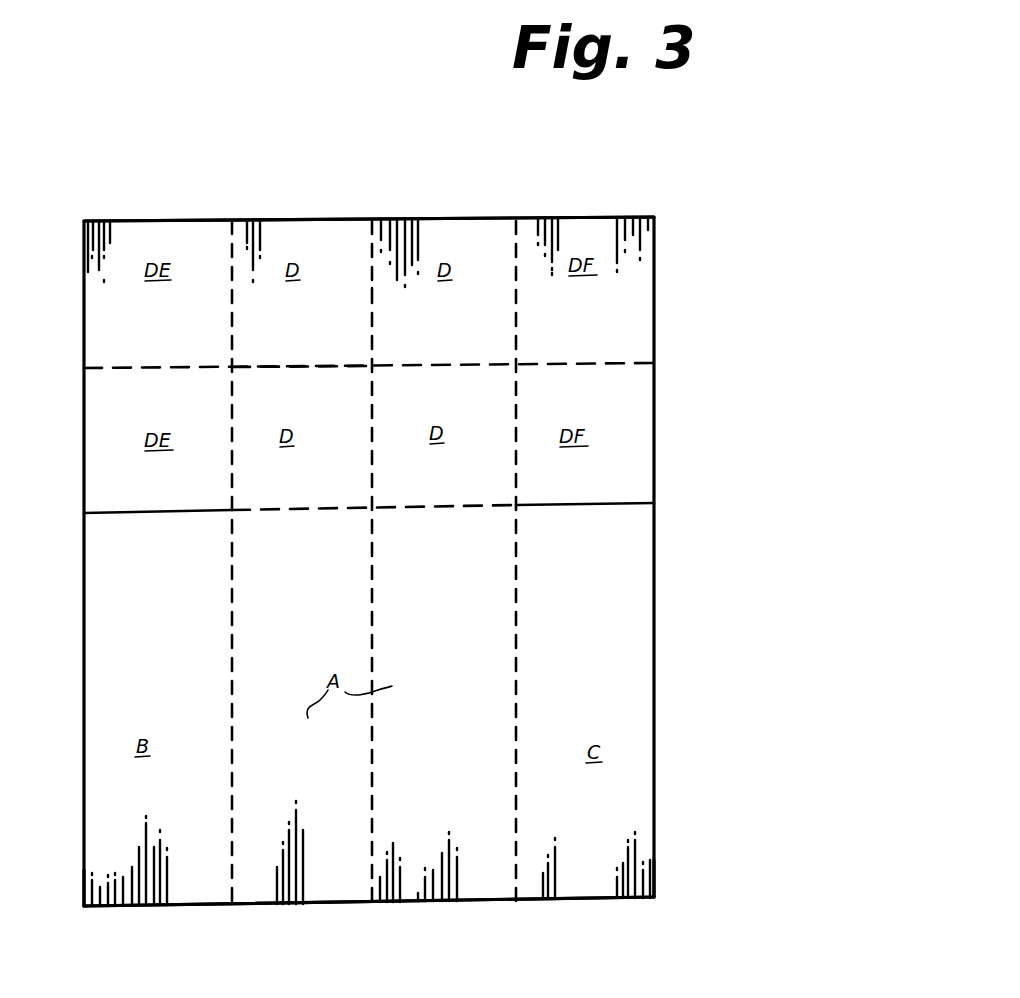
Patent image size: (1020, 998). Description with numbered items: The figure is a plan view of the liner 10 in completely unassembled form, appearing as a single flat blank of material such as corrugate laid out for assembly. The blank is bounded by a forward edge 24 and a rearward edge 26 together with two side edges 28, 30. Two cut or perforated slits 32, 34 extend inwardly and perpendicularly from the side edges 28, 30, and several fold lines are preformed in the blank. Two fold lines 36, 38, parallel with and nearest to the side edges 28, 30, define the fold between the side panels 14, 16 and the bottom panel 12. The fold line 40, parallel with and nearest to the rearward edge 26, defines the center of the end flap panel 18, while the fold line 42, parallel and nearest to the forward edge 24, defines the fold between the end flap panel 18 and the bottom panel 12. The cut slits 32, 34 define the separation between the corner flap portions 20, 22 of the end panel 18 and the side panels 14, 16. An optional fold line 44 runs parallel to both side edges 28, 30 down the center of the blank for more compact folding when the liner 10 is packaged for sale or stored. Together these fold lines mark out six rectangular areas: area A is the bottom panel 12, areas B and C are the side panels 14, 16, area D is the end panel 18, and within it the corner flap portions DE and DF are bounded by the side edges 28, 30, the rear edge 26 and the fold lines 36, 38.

The liner 10 is at (648, 598).
The bottom panel 12 is at (383, 774).
The side panel 14 is at (154, 675).
The side panel 16 is at (593, 681).
The end flap panel 18 is at (380, 376).
The corner flap portion 20 is at (99, 346).
The corner flap portion 22 is at (634, 337).
The forward edge 24 is at (580, 898).
The rearward edge 26 is at (128, 221).
The side edge 28 is at (84, 861).
The side edge 30 is at (656, 838).
The cut or perforated slit 32 is at (110, 512).
The cut or perforated slit 34 is at (637, 502).
The fold line 36 is at (234, 889).
The fold line 38 is at (516, 870).
The fold line 40 is at (302, 366).
The fold line 42 is at (314, 503).
The optional fold line 44 is at (373, 560).